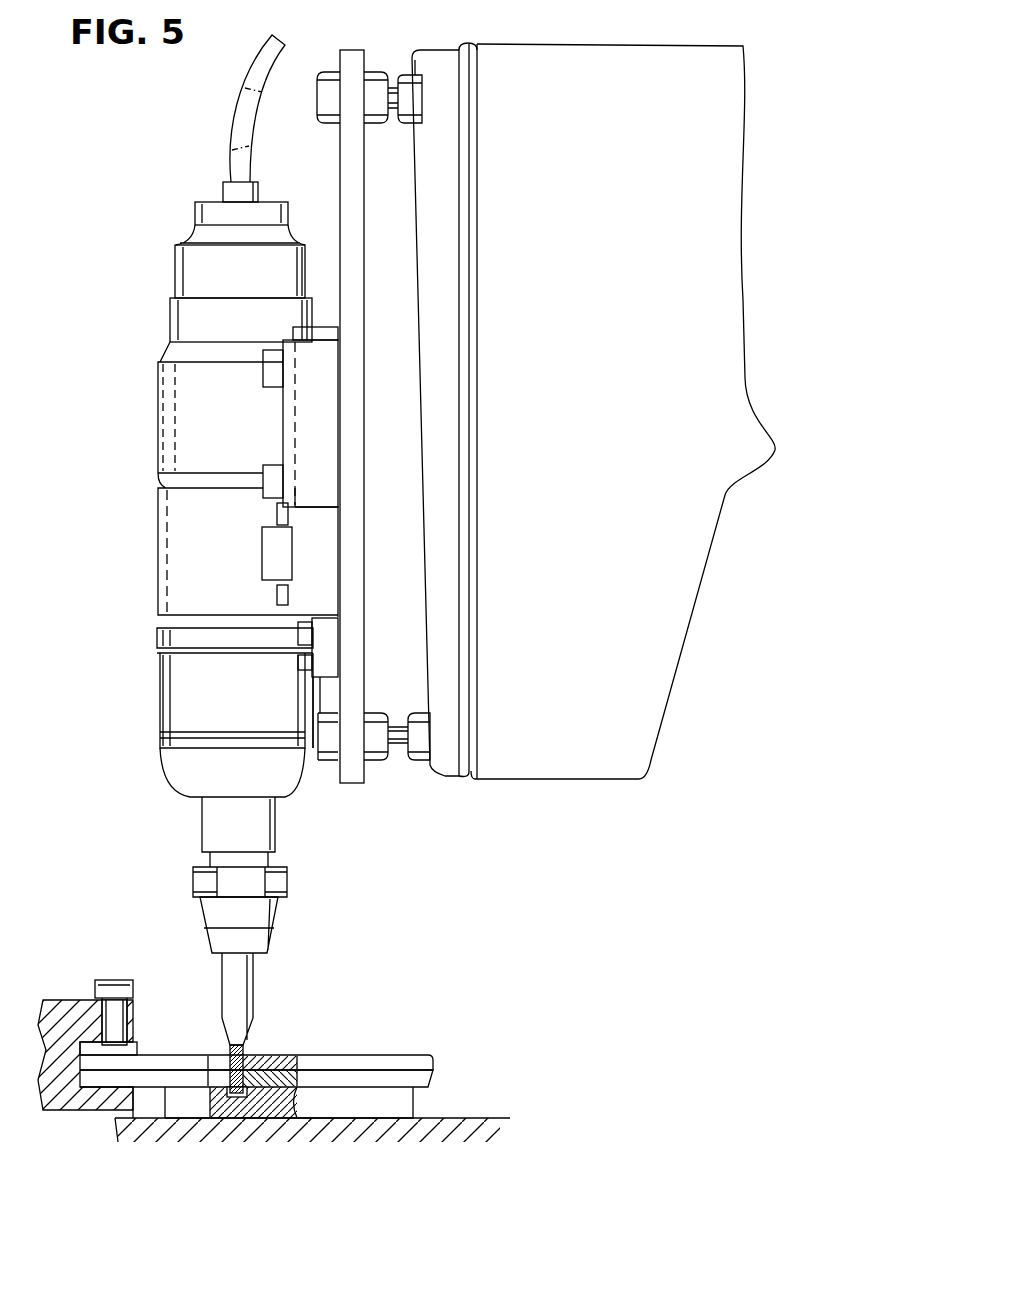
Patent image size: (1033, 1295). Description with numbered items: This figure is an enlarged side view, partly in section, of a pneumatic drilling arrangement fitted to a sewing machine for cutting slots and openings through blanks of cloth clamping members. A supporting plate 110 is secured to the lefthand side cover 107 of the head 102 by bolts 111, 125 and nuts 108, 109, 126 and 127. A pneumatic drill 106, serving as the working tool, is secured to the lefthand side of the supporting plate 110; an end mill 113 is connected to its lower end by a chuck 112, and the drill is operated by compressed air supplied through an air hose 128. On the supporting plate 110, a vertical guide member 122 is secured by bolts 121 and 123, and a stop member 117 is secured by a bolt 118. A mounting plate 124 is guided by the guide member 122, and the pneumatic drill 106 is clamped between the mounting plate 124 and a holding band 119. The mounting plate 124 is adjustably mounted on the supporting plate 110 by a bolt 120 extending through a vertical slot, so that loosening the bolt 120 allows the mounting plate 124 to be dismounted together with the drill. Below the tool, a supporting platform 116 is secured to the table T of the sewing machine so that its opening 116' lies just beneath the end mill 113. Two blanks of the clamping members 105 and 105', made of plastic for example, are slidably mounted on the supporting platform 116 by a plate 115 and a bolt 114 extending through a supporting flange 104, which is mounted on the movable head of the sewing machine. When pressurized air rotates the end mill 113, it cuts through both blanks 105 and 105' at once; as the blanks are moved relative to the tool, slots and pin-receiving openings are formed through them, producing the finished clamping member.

The head 102 is at (610, 362).
The supporting flange 104 is at (135, 1013).
The clamping member blank 105 is at (256, 1023).
The clamping member blank 105' is at (297, 1056).
The pneumatic drill 106 is at (157, 688).
The lefthand side cover 107 is at (445, 770).
The nut 108 is at (418, 770).
The nut 109 is at (380, 760).
The supporting plate 110 is at (351, 783).
The bolt 111 is at (317, 760).
The chuck 112 is at (287, 885).
The end mill 113 is at (253, 1010).
The bolt 114 is at (112, 980).
The plate 115 is at (140, 1050).
The supporting platform 116 is at (318, 1094).
The opening 116' is at (266, 1110).
The stop member 117 is at (325, 667).
The bolt 118 is at (283, 661).
The holding band 119 is at (156, 587).
The bolt 120 is at (262, 545).
The bolt 121 is at (263, 497).
The vertical guide member 122 is at (283, 432).
The bolt 123 is at (263, 378).
The mounting plate 124 is at (292, 328).
The bolt 125 is at (320, 118).
The nut 126 is at (377, 123).
The nut 127 is at (405, 75).
The air hose 128 is at (233, 127).
The table T is at (485, 1118).